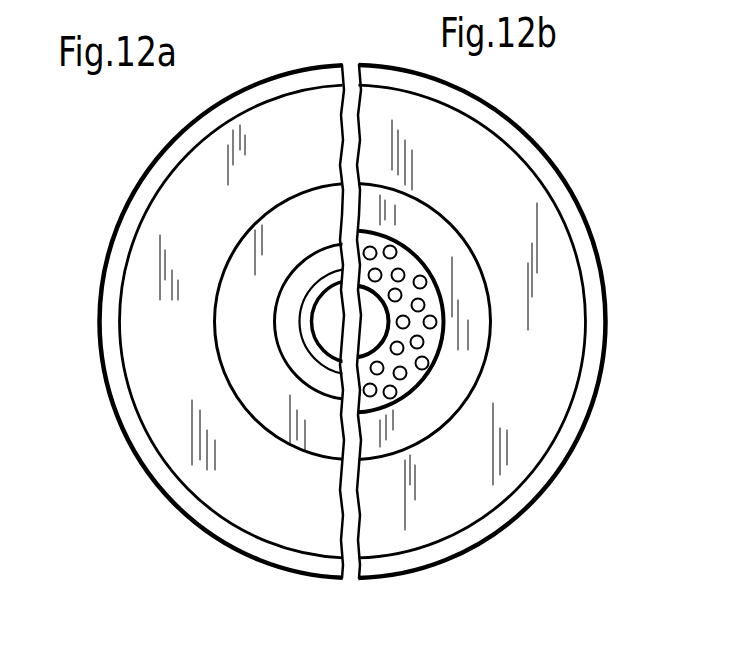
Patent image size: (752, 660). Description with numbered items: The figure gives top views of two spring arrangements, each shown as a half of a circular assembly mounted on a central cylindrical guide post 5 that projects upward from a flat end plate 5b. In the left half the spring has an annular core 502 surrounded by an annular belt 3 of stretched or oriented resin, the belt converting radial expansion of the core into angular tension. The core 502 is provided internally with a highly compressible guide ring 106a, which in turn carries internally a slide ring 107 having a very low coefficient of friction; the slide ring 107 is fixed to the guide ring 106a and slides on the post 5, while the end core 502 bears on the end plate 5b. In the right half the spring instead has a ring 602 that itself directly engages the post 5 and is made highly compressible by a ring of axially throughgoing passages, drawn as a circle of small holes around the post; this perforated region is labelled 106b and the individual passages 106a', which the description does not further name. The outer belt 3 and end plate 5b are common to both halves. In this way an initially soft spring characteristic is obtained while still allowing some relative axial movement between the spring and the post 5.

In FIG. 12a, the annular belt 3 is at (153, 280).
In FIG. 12b, the annular belt 3 is at (558, 288).
In FIG. 12a, the central cylindrical guide post 5 is at (310, 342).
In FIG. 12b, the central cylindrical guide post 5 is at (380, 328).
In FIG. 12a, the flat end plate 5b is at (200, 505).
In FIG. 12b, the flat end plate 5b is at (567, 428).
In FIG. 12a, the slide ring 107 is at (333, 343).
In FIG. 12a, the guide ring 106a is at (229, 322).
In FIG. 12b, the perforation holes 106a' is at (522, 316).
In FIG. 12b, the perforated ring 106b is at (435, 280).
In FIG. 12a, the annular core 502 is at (260, 255).
In FIG. 12b, the ring 602 is at (423, 213).